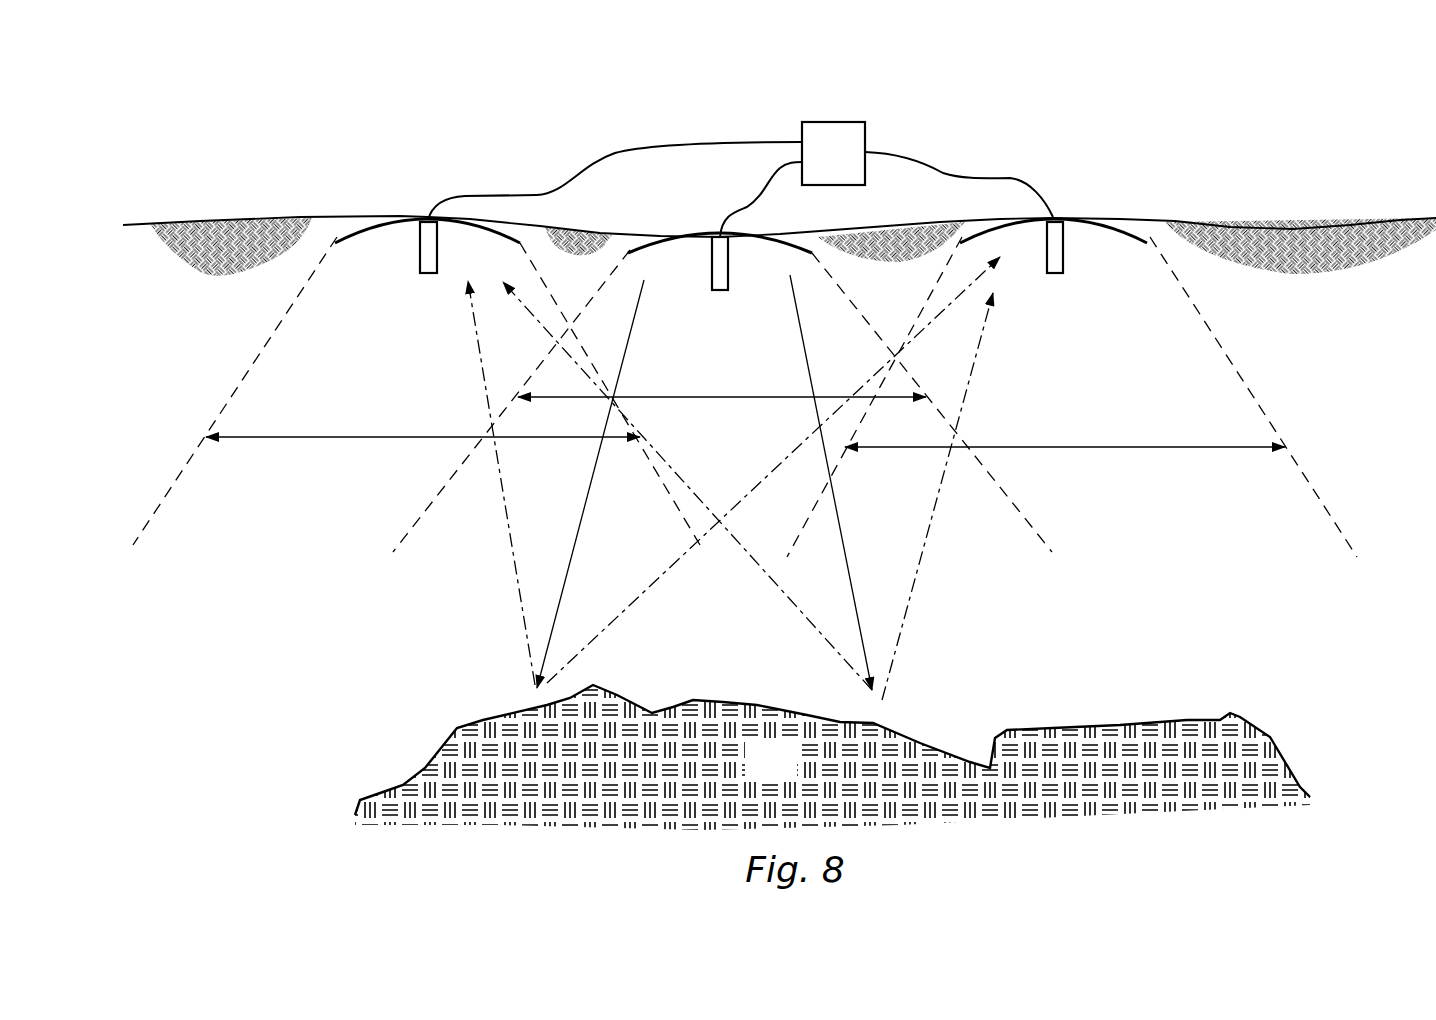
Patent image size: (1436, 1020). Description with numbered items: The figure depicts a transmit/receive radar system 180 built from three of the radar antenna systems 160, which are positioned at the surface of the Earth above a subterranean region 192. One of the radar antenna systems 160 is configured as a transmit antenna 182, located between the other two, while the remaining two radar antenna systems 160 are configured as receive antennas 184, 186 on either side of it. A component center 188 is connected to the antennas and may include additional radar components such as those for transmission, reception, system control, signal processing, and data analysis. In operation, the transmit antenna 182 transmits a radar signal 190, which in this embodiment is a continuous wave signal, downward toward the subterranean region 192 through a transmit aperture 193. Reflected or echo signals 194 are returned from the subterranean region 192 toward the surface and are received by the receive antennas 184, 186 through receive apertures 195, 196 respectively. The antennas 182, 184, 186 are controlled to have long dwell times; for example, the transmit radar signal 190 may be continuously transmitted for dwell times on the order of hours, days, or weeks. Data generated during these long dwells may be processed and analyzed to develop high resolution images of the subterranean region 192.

The radar antenna system 160 is at (427, 300).
The transmit/receive radar system 180 is at (608, 100).
The transmit antenna 182 is at (702, 217).
The receive antenna 184 is at (393, 197).
The receive antenna 186 is at (1067, 197).
The component center 188 is at (836, 122).
The radar signal 190 is at (580, 533).
The subterranean region 192 is at (789, 775).
The transmit aperture 193 is at (722, 400).
The reflected or echo signals 194 is at (506, 553).
The receive aperture 195 is at (348, 440).
The receive aperture 196 is at (1126, 450).